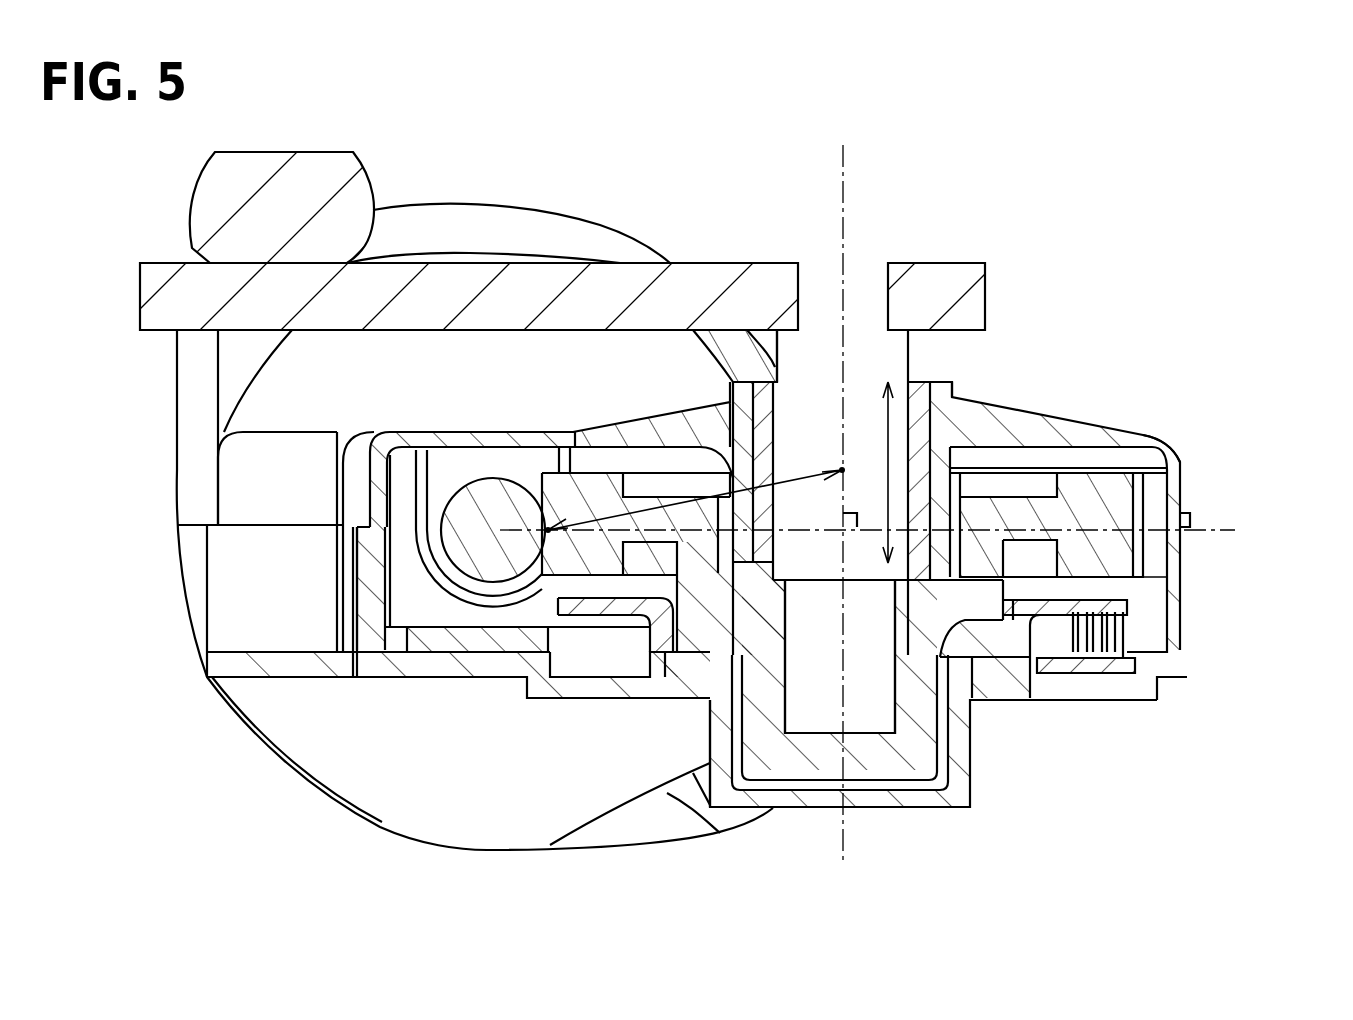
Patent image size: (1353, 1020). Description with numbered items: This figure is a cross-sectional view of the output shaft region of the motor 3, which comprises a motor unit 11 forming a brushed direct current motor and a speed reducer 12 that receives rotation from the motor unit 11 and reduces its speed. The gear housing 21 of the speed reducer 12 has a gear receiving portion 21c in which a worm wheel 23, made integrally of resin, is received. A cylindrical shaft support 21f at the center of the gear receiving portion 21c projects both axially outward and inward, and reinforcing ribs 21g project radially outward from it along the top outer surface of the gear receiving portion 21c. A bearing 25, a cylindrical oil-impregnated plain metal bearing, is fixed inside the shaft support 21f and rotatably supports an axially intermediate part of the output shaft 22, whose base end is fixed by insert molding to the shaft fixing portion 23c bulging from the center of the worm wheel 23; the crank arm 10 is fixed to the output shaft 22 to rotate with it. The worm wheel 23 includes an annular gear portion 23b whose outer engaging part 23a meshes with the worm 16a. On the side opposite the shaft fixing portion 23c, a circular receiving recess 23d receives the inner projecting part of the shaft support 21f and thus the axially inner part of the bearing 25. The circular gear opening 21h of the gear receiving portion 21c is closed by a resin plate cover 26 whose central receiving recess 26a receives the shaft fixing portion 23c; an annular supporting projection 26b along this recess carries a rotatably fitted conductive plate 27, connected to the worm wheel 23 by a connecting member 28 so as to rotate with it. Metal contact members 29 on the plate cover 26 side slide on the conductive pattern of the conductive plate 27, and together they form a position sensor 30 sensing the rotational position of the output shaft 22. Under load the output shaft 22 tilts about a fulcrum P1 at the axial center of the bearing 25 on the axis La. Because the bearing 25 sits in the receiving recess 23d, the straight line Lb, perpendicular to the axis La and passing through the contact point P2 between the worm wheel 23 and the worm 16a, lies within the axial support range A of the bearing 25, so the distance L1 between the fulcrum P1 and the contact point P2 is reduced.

The crank arm 10 is at (620, 268).
The motor unit 11 is at (487, 217).
The speed reducer 12 is at (1170, 456).
The worm 16a is at (473, 472).
The gear housing 21 is at (1100, 436).
The gear receiving portion 21c is at (1182, 512).
The shaft support 21f is at (953, 393).
The reinforcing ribs 21g is at (690, 413).
The gear opening 21h is at (1187, 667).
The output shaft 22 is at (864, 268).
The worm wheel 23 is at (635, 405).
The engaging part 23a is at (543, 470).
The gear portion 23b is at (597, 480).
The shaft fixing portion 23c is at (920, 745).
The receiving recess 23d is at (958, 488).
The bearing 25 is at (922, 390).
The plate cover 26 is at (558, 690).
The receiving recess 26a is at (712, 723).
The supporting projection 26b is at (722, 667).
The conductive plate 27 is at (1122, 605).
The connecting member 28 is at (947, 643).
The contact members 29 is at (1112, 676).
The position sensor 30 is at (1165, 585).
The motor 3 is at (1095, 178).
The axial support range A is at (887, 472).
The distance L1 is at (800, 472).
The axis La is at (843, 176).
The straight line Lb is at (1235, 522).
The fulcrum P1 is at (845, 468).
The contact point P2 is at (546, 528).